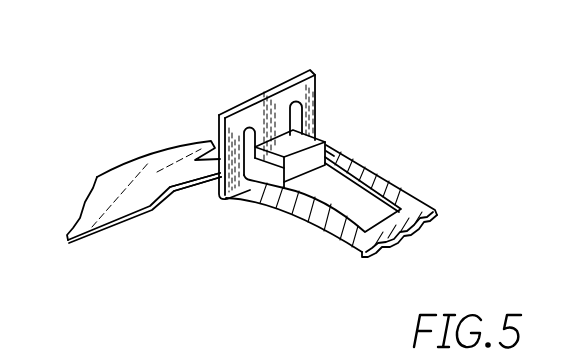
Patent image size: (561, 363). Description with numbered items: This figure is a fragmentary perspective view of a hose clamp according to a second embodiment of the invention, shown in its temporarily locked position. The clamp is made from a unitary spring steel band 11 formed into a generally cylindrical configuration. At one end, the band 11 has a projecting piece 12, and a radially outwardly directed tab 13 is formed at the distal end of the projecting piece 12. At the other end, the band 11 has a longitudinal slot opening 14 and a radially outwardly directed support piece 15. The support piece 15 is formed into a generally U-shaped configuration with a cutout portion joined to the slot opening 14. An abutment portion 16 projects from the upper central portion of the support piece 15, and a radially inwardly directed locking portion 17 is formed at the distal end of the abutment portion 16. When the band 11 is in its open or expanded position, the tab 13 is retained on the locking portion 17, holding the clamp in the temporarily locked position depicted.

The spring steel band 11 is at (122, 182).
The projecting piece 12 is at (203, 170).
The tab 13 is at (265, 179).
The longitudinal slot opening 14 is at (368, 203).
The support piece 15 is at (259, 100).
The abutment portion 16 is at (313, 131).
The locking portion 17 is at (333, 153).